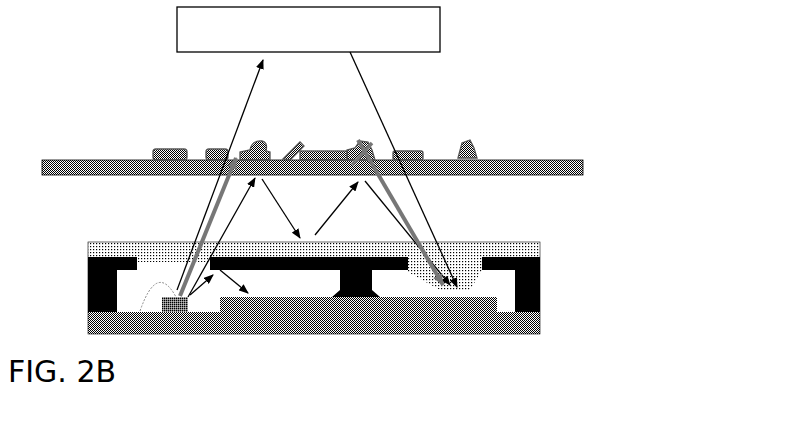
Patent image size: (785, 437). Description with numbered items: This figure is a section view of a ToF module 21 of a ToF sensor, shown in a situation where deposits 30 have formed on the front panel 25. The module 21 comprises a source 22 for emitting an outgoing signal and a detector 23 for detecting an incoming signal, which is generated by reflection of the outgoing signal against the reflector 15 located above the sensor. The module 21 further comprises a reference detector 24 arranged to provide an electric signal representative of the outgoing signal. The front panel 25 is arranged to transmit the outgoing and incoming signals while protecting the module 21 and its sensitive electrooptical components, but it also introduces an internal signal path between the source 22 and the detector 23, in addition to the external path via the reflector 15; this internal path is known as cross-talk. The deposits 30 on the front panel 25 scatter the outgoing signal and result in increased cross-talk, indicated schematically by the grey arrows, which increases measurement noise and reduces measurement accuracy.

The reflector 15 is at (292, 41).
The front panel 25 is at (511, 168).
The deposits 30 is at (417, 152).
The ToF module 21 is at (87, 294).
The source 22 is at (181, 300).
The detector 23 is at (447, 297).
The reference detector 24 is at (248, 297).